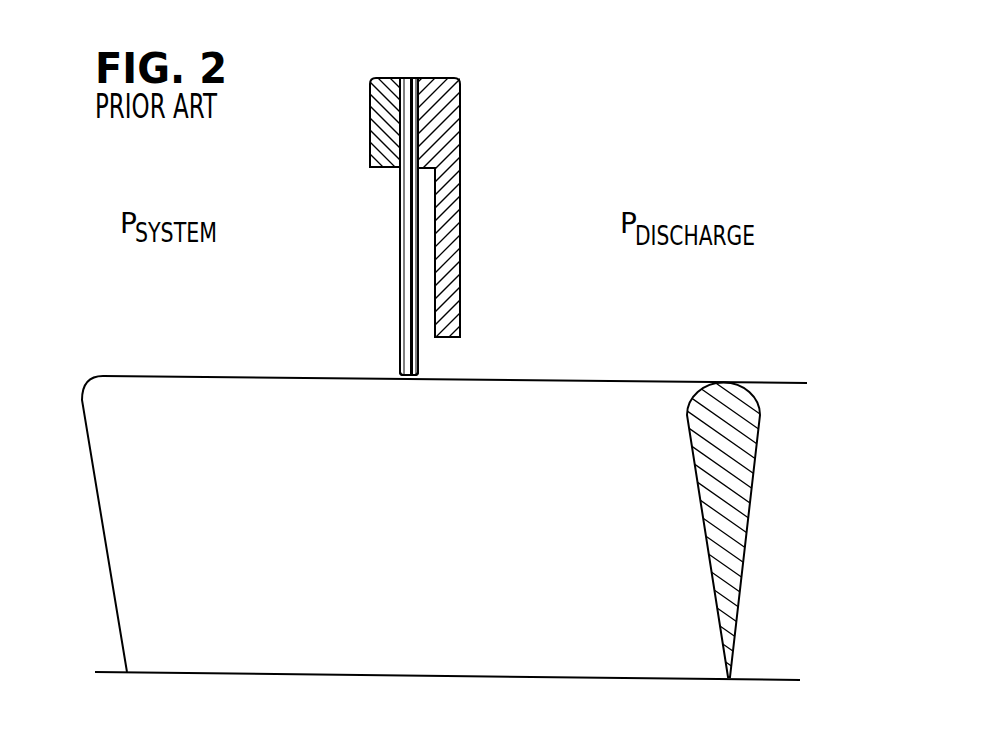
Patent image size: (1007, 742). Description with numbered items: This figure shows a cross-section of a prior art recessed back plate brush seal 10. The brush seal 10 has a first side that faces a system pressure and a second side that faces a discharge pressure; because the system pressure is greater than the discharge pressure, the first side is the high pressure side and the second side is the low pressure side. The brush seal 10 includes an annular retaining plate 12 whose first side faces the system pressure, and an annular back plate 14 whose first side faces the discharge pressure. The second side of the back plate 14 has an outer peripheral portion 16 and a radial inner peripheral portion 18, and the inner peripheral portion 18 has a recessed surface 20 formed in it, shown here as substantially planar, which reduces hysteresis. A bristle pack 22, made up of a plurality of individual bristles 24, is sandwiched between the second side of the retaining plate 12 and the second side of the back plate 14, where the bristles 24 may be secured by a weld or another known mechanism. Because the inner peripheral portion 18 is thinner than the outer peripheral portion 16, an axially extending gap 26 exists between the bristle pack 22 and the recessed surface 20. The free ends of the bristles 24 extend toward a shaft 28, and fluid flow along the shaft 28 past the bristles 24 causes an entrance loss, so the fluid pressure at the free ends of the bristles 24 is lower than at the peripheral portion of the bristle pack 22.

The recessed back plate brush seal 10 is at (508, 85).
The annular retaining plate 12 is at (370, 119).
The annular back plate 14 is at (438, 78).
The outer peripheral portion 16 is at (470, 79).
The radial inner peripheral portion 18 is at (470, 168).
The recessed surface 20 is at (441, 313).
The bristle pack 22 is at (382, 291).
The bristles 24 is at (398, 356).
The axially extending gap 26 is at (427, 280).
The shaft 28 is at (667, 382).